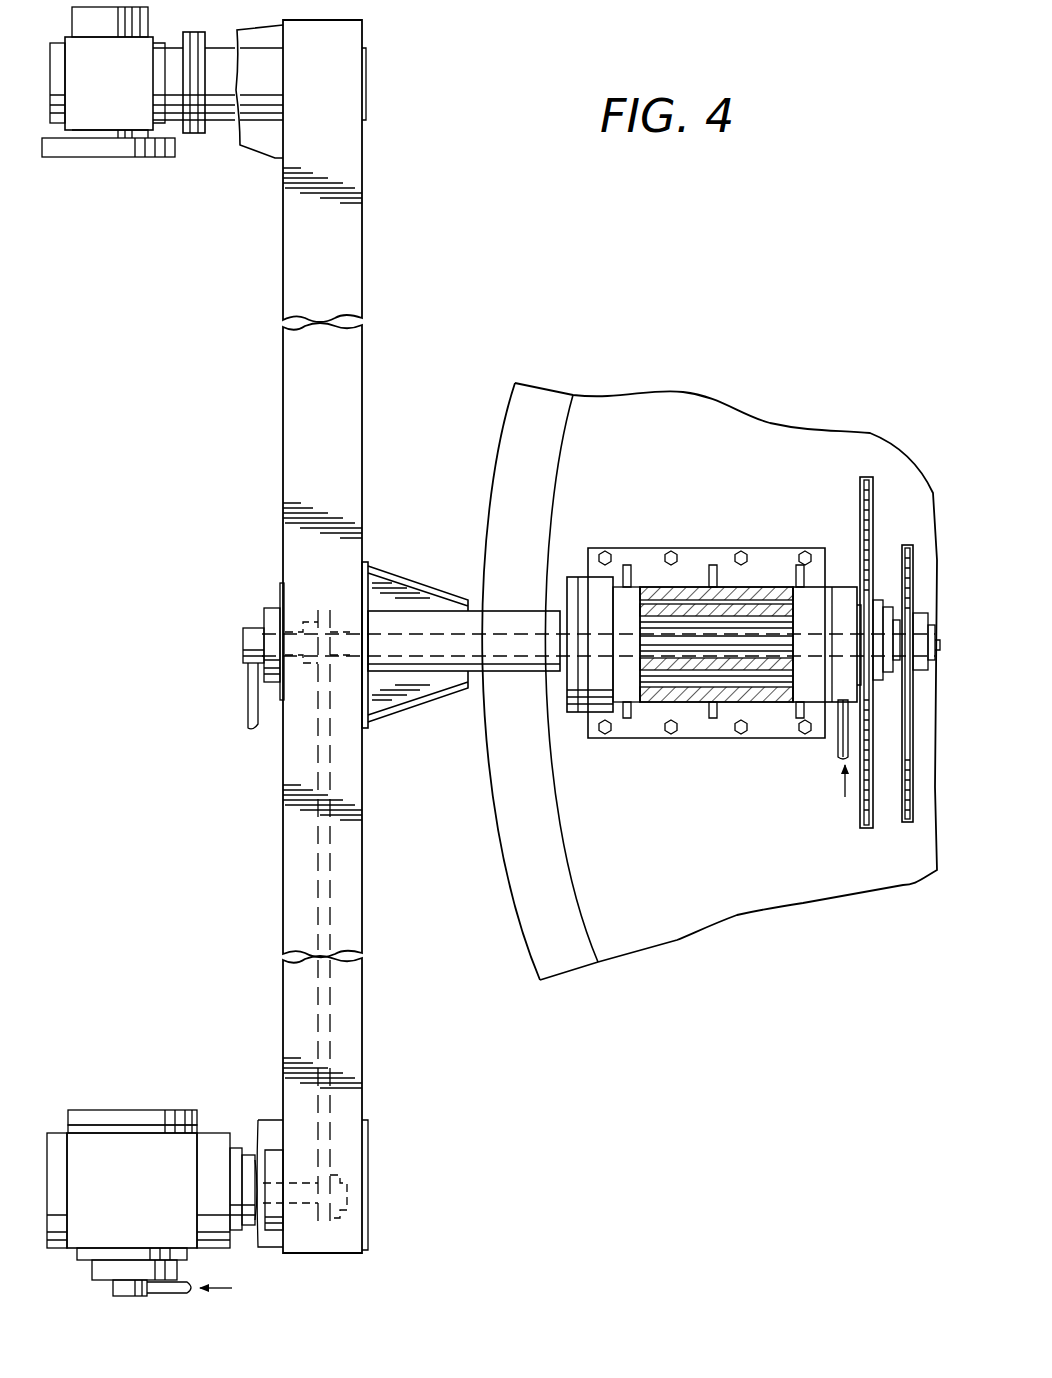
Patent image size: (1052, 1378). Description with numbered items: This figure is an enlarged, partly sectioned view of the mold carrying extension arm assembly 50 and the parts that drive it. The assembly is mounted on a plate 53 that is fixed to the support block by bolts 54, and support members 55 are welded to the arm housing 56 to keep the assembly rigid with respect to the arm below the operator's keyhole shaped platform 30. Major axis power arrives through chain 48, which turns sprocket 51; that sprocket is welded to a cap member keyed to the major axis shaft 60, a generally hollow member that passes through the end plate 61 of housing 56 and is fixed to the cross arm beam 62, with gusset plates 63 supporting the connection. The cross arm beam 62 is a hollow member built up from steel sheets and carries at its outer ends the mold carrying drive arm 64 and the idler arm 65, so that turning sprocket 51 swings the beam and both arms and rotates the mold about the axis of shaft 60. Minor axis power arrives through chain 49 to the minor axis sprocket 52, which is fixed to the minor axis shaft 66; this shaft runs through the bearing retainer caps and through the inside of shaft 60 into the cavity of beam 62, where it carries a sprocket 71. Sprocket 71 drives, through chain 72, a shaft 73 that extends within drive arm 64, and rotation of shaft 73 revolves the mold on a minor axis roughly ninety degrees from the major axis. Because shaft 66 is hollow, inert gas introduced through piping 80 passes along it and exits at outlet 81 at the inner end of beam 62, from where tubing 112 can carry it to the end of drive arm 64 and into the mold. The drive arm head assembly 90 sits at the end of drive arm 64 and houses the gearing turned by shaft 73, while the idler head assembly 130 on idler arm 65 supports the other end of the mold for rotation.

The keyhole shaped platform 30 is at (700, 860).
The chain 48 is at (848, 805).
The chain 49 is at (903, 808).
The mold carrying extension arm assembly 50 is at (703, 540).
The sprocket 51 is at (873, 575).
The minor axis sprocket 52 is at (898, 655).
The plate 53 is at (783, 552).
The bolts 54 is at (671, 550).
The support members 55 is at (630, 718).
The arm housing 56 is at (700, 700).
The major axis shaft 60 is at (510, 622).
The end plate 61 is at (585, 580).
The cross arm beam 62 is at (292, 380).
The gusset plates 63 is at (430, 592).
The mold carrying drive arm 64 is at (247, 1156).
The idler arm 65 is at (220, 108).
The minor axis shaft 66 is at (345, 628).
The sprocket 71 is at (333, 605).
The chain 72 is at (330, 885).
The shaft 73 is at (305, 1185).
The piping 80 is at (936, 660).
The outlet 81 is at (243, 652).
The drive arm head assembly 90 is at (116, 1105).
The tubing 112 is at (188, 1290).
The idler head assembly 130 is at (128, 162).